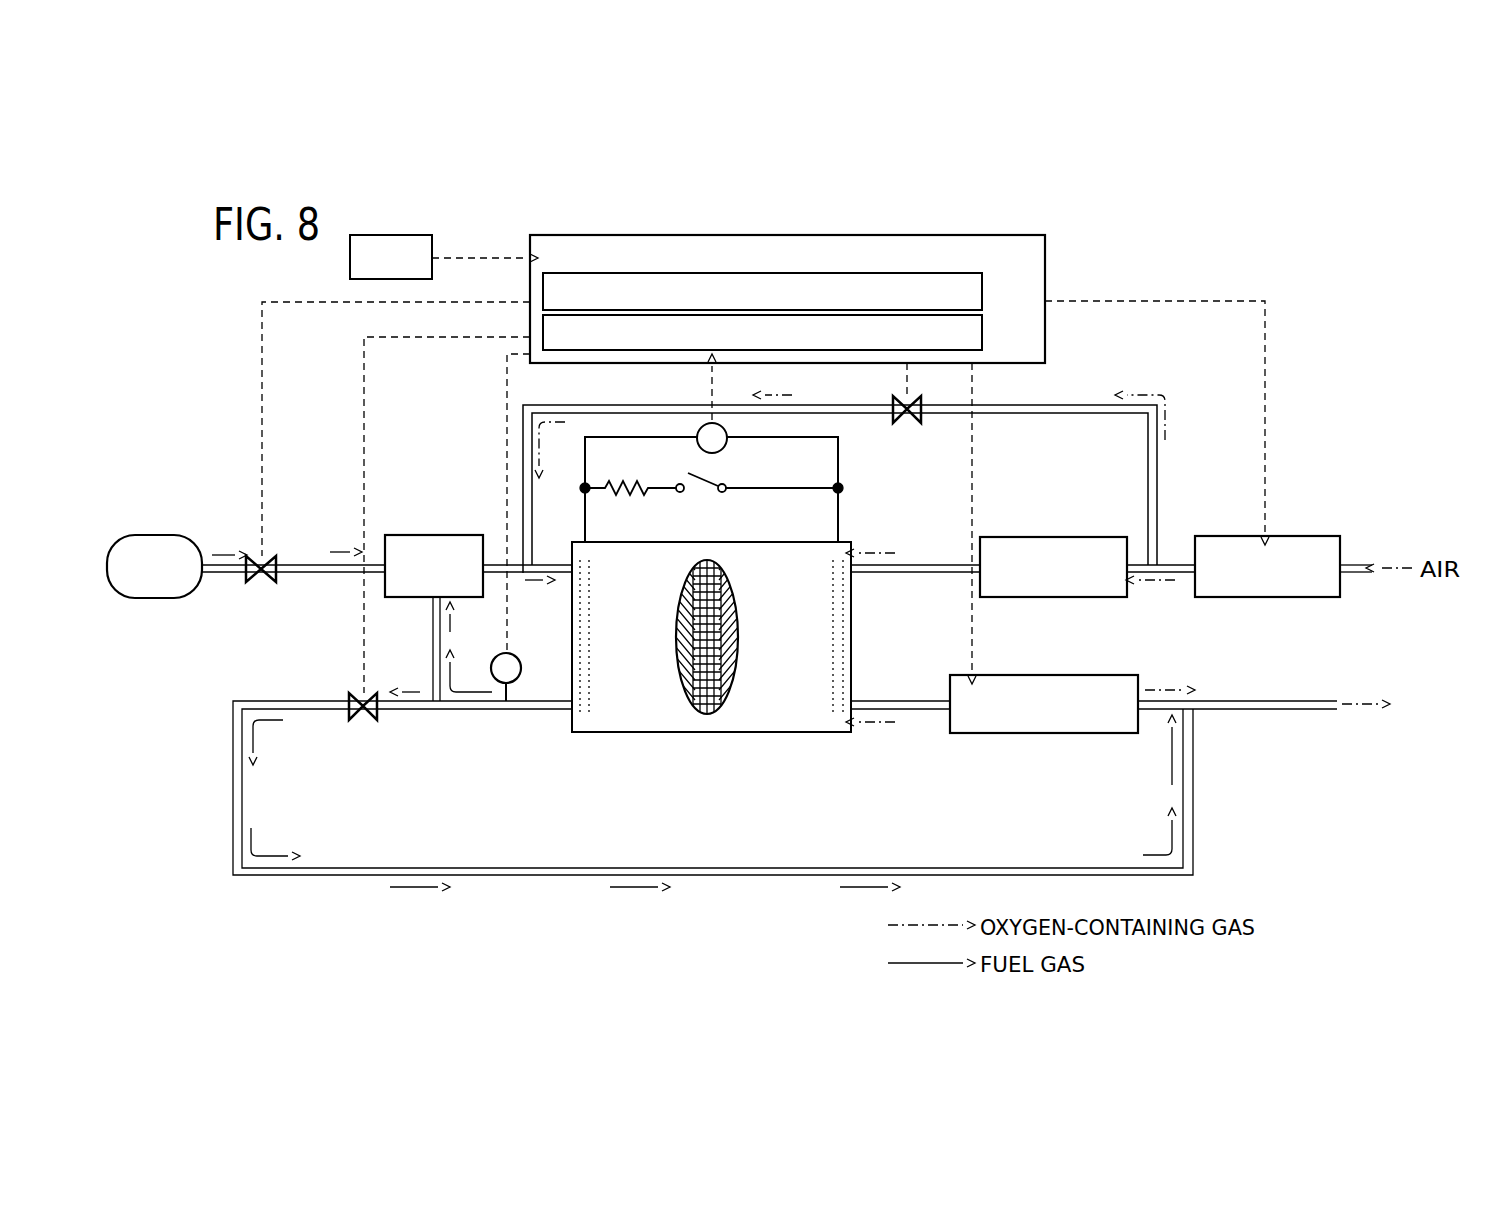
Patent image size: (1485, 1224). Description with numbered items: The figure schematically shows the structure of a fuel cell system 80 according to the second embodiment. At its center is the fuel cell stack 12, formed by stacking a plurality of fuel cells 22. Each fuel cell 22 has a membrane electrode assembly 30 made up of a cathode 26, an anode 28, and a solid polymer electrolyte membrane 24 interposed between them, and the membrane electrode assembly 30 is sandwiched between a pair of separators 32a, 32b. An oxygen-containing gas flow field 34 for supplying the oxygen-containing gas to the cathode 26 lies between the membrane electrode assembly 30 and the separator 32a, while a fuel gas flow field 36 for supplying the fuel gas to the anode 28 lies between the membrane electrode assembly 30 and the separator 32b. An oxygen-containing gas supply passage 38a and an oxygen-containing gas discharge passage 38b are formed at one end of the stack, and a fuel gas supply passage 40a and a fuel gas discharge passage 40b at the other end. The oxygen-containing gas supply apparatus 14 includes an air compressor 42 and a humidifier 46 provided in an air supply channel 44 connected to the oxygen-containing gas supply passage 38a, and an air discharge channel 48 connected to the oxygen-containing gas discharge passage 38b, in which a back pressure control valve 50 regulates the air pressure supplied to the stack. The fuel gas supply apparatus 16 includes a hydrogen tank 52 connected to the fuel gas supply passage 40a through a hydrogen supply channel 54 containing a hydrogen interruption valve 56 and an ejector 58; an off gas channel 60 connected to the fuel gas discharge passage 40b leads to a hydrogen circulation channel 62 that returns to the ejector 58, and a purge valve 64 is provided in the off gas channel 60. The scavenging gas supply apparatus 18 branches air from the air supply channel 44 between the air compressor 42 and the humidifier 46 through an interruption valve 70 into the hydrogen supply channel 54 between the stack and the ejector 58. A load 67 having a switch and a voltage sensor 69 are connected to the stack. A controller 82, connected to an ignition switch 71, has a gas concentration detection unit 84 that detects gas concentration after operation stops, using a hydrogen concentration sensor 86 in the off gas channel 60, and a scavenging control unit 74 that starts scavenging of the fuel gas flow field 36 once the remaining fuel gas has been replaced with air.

The fuel cell stack 12 is at (754, 536).
The oxygen-containing gas supply apparatus 14 is at (1312, 533).
The fuel gas supply apparatus 16 is at (213, 530).
The scavenging gas supply apparatus 18 is at (1084, 397).
The fuel cell 22 is at (805, 818).
The solid polymer electrolyte membrane 24 is at (707, 714).
The cathode 26 is at (717, 706).
The anode 28 is at (697, 706).
The membrane electrode assembly 30 is at (752, 780).
The separator 32a is at (728, 692).
The separator 32b is at (690, 692).
The oxygen-containing gas flow field 34 is at (738, 614).
The fuel gas flow field 36 is at (594, 598).
The oxygen-containing gas supply passage 38a is at (852, 578).
The oxygen-containing gas discharge passage 38b is at (852, 694).
The fuel gas supply passage 40a is at (572, 578).
The fuel gas discharge passage 40b is at (572, 694).
The air compressor 42 is at (1312, 598).
The air supply channel 44 is at (926, 563).
The humidifier 46 is at (1115, 536).
The air discharge channel 48 is at (918, 701).
The back pressure control valve 50 is at (1125, 675).
The hydrogen tank 52 is at (143, 535).
The hydrogen supply channel 54 is at (549, 562).
The hydrogen interruption valve 56 is at (262, 585).
The ejector 58 is at (455, 535).
The off gas channel 60 is at (545, 712).
The hydrogen circulation channel 62 is at (433, 650).
The purge valve 64 is at (363, 722).
The load 67 is at (622, 492).
The voltage sensor 69 is at (700, 451).
The interruption valve 70 is at (907, 425).
The ignition switch 71 is at (410, 234).
The scavenging control unit 74 is at (982, 332).
The fuel cell system 80 is at (1178, 260).
The controller 82 is at (950, 232).
The gas concentration detection unit 84 is at (982, 293).
The hydrogen concentration sensor 86 is at (493, 662).